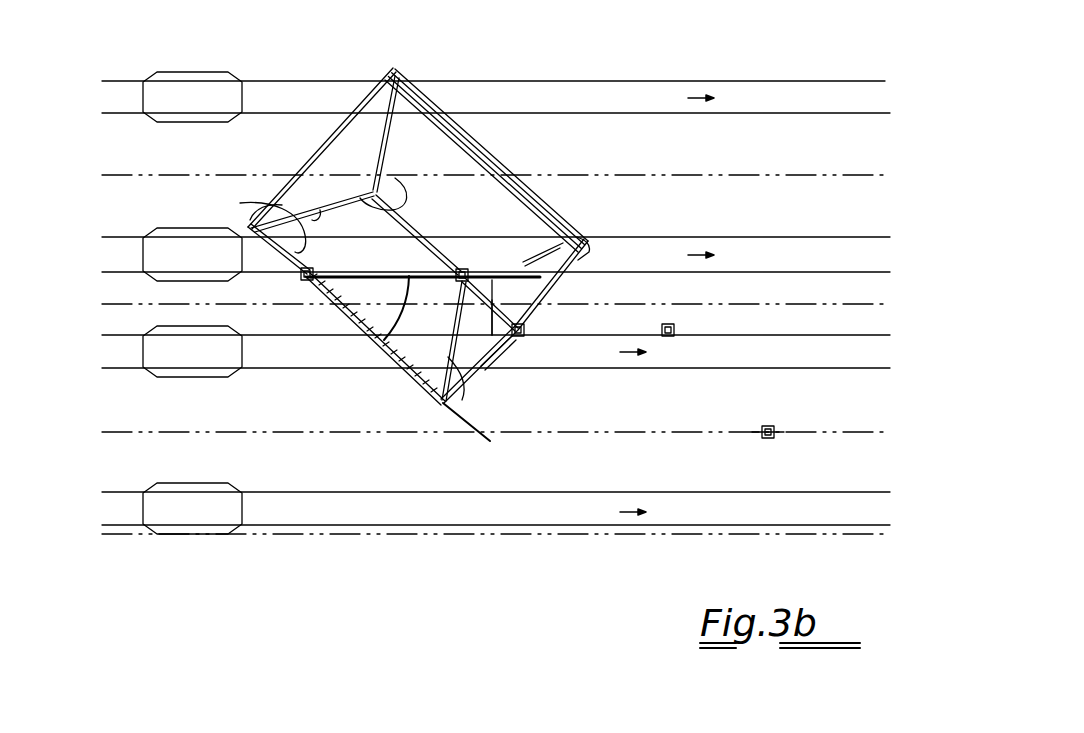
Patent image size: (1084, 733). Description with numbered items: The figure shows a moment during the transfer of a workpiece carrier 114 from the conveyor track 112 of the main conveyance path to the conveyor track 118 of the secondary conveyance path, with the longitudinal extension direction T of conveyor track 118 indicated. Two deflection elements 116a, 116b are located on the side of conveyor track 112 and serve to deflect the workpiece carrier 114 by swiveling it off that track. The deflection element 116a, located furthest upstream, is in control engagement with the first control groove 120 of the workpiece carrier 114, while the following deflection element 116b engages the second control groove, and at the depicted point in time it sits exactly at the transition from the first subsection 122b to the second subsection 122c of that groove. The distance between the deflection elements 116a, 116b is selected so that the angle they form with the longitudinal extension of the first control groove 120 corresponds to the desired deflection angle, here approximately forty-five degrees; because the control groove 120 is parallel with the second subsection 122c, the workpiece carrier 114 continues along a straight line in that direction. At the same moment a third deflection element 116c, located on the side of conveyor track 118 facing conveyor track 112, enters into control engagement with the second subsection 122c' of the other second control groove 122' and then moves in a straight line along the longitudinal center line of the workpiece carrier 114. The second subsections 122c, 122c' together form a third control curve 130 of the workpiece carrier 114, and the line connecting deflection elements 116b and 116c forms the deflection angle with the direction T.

The conveyor track of the main conveyance path 112 is at (857, 70).
The workpiece carrier 114 is at (394, 67).
The first deflection element 116a is at (277, 198).
The second deflection element 116b is at (464, 273).
The third deflection element 116c is at (523, 333).
The conveyor track of the secondary conveyance track 118 is at (118, 514).
The first control groove 120 is at (357, 318).
The other second control groove 122' is at (213, 176).
The first subsection of second control groove 122b is at (480, 368).
The second subsection of second control groove 122c is at (305, 173).
The second subsection of the other second control groove 122c' is at (646, 266).
The third control curve 130 is at (672, 266).
The longitudinal extension direction T is at (878, 304).